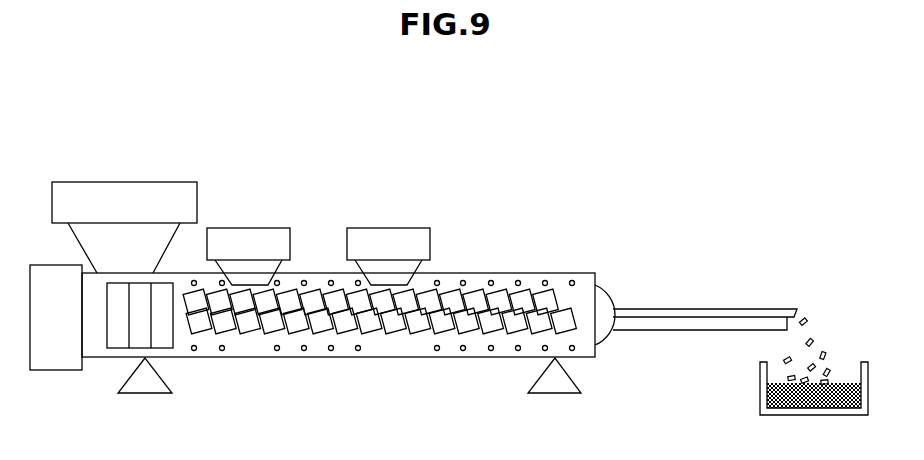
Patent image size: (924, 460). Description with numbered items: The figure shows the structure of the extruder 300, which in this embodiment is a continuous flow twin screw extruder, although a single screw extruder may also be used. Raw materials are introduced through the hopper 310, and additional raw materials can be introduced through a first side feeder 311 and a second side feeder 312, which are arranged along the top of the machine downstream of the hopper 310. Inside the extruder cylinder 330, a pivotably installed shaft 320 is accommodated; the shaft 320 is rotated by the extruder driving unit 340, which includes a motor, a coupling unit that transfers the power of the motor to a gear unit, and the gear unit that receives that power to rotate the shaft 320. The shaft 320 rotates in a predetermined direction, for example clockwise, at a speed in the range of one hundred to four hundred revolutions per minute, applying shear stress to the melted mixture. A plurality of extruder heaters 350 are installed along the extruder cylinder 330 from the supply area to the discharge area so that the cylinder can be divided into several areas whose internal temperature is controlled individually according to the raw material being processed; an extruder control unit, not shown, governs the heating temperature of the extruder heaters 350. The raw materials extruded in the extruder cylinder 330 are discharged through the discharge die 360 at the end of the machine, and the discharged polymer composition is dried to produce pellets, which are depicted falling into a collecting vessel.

The extruder 300 is at (152, 124).
The hopper 310 is at (122, 186).
The first side feeder 311 is at (265, 232).
The second side feeder 312 is at (403, 233).
The shaft 320 is at (402, 337).
The extruder cylinder 330 is at (347, 351).
The extruder driving unit 340 is at (118, 346).
The extruder heater 350 is at (277, 353).
The discharge die 360 is at (604, 327).